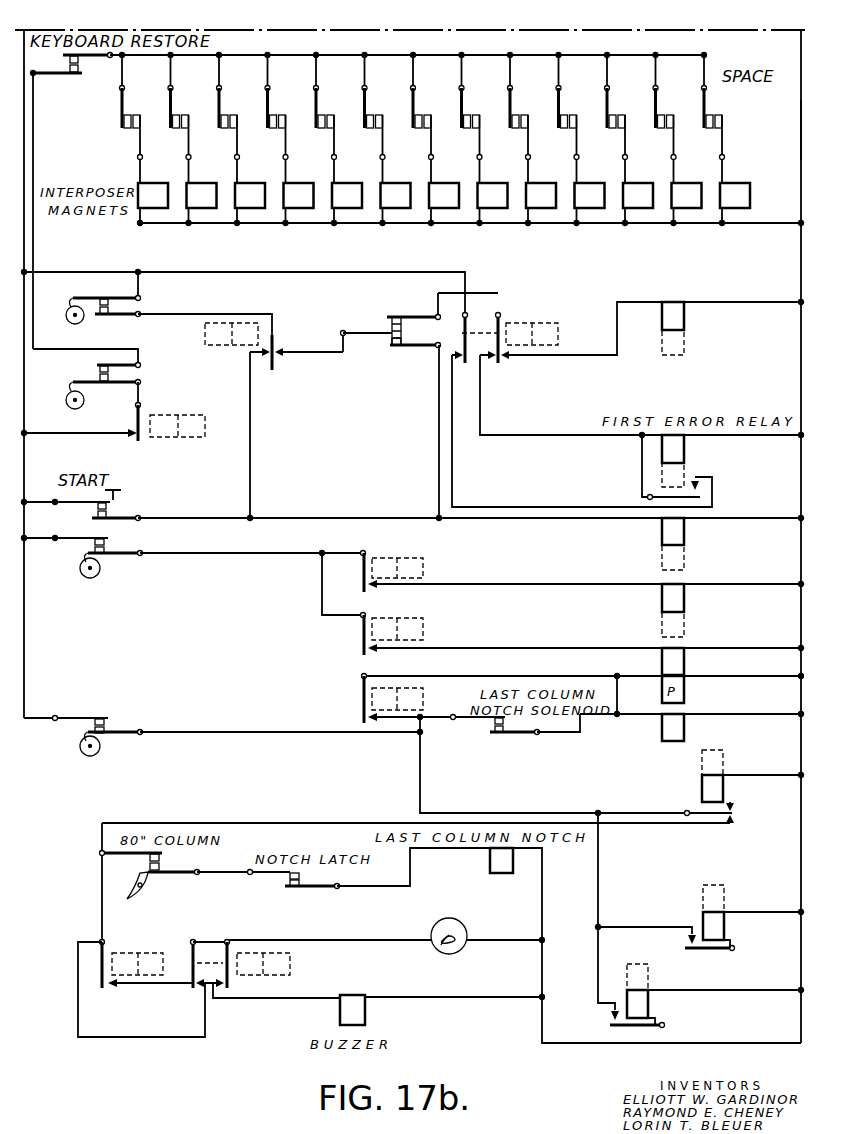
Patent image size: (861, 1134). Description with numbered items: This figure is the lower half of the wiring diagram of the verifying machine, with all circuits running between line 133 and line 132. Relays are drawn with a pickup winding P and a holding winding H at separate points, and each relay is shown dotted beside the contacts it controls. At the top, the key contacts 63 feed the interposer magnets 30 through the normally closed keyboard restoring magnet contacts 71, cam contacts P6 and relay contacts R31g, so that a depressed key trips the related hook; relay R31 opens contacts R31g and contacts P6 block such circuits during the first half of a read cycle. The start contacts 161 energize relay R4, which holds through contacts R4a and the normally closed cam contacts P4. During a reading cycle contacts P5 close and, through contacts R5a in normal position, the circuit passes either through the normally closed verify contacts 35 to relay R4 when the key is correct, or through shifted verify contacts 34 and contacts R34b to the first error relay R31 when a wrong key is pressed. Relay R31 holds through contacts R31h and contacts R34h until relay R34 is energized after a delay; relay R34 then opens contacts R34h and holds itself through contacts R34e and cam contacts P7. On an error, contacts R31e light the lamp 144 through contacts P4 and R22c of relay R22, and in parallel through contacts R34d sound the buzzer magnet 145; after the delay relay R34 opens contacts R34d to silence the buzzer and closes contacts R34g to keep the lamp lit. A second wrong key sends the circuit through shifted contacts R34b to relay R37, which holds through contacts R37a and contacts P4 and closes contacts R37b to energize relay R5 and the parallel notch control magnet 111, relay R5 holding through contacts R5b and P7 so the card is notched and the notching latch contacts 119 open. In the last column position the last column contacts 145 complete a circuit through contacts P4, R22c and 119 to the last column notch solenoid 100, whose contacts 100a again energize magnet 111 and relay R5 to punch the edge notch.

The keyboard restoring magnet contacts 71 is at (82, 77).
The key contacts 63 is at (322, 130).
The interposer magnet 30 is at (350, 207).
The line 132 is at (801, 136).
The cam operated contacts P5 is at (140, 306).
The cam contacts P6 is at (96, 374).
The line 133 is at (24, 421).
The relay contacts R31g is at (139, 441).
The first error relay R31 is at (184, 416).
The relay R5 is at (240, 346).
The relay contacts R5a is at (274, 370).
The verify contacts 34 is at (388, 317).
The verify contacts 35 is at (392, 346).
The relay contacts R34h is at (466, 364).
The relay contacts R34b is at (500, 364).
The relay R34 is at (536, 323).
The relay R37 is at (684, 322).
The relay contacts R31h is at (702, 497).
The start contacts 161 is at (108, 513).
The relay R4 is at (684, 538).
The cam contacts P7 is at (106, 549).
The relay contacts R34e is at (366, 592).
The relay contacts R5b is at (366, 655).
The notch control magnet 111 is at (662, 734).
The relay contacts R37b is at (362, 723).
The solenoid contacts 100a is at (490, 732).
The cam operated contacts P4 is at (106, 727).
The relay R22 is at (724, 760).
The relay contacts R22c is at (733, 816).
The last column contacts / buzzer magnet 145 is at (160, 862).
The notching latch contacts 119 is at (288, 885).
The last column notch solenoid 100 is at (490, 868).
The lamp 144 is at (462, 926).
The relay contacts R31e is at (103, 988).
The relay contacts R34g is at (194, 988).
The relay contacts R34d is at (228, 989).
The relay contacts R37a is at (684, 954).
The relay contacts R4a is at (607, 1024).